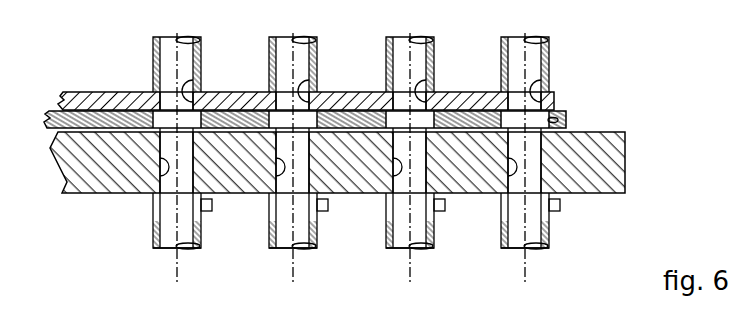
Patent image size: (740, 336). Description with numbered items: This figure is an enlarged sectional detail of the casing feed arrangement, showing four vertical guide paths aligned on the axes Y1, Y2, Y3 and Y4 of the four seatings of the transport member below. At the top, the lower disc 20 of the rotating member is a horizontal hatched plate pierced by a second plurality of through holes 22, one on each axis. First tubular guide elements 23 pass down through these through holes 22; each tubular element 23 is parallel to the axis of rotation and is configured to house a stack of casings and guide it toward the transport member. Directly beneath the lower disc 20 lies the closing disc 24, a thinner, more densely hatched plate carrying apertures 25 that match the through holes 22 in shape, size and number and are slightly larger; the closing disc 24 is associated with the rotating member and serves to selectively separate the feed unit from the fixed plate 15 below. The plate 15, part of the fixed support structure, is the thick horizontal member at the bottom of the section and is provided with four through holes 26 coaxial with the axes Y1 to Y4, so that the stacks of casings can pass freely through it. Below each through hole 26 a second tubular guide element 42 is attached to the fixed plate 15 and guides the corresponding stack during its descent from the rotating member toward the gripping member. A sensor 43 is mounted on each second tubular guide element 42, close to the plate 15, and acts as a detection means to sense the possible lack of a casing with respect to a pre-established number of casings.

The plate 15 is at (90, 185).
The lower disc 20 is at (128, 92).
The through holes 22 is at (196, 78).
The tubular elements 23 is at (268, 44).
The closing disc 24 is at (50, 112).
The apertures 25 is at (567, 122).
The through holes 26 is at (160, 158).
The second tubular guide element 42 is at (272, 249).
The sensor 43 is at (206, 211).
The axis of first seating Y1 is at (174, 274).
The axis of second seating Y2 is at (290, 274).
The axis of third seating Y3 is at (407, 274).
The axis of fourth seating Y4 is at (522, 274).